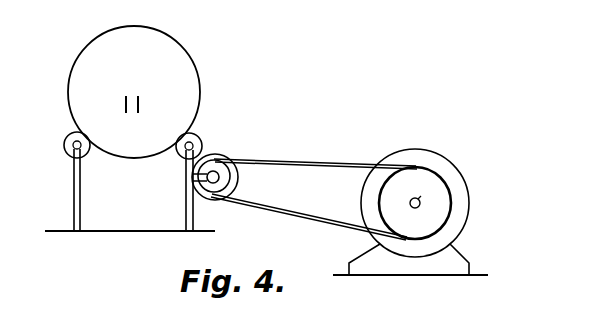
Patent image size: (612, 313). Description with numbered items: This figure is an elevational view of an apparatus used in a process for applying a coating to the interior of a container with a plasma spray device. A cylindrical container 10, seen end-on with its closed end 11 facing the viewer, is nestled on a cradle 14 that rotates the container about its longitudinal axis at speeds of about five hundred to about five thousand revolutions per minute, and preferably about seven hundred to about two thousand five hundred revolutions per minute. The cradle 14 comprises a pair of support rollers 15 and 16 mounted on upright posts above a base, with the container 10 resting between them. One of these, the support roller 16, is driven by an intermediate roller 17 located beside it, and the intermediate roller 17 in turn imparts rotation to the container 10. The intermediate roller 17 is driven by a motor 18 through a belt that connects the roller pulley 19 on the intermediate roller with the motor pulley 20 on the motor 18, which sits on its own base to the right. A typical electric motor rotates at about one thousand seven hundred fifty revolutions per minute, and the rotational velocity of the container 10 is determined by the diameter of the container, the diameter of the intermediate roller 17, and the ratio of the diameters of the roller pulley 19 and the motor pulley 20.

The cylindrical container 10 is at (191, 66).
The closed end 11 is at (132, 104).
The cradle 14 is at (74, 195).
The support roller 15 is at (66, 138).
The support roller 16 is at (201, 140).
The intermediate roller 17 is at (222, 155).
The motor 18 is at (445, 158).
The roller pulley 19 is at (238, 182).
The motor pulley 20 is at (452, 205).